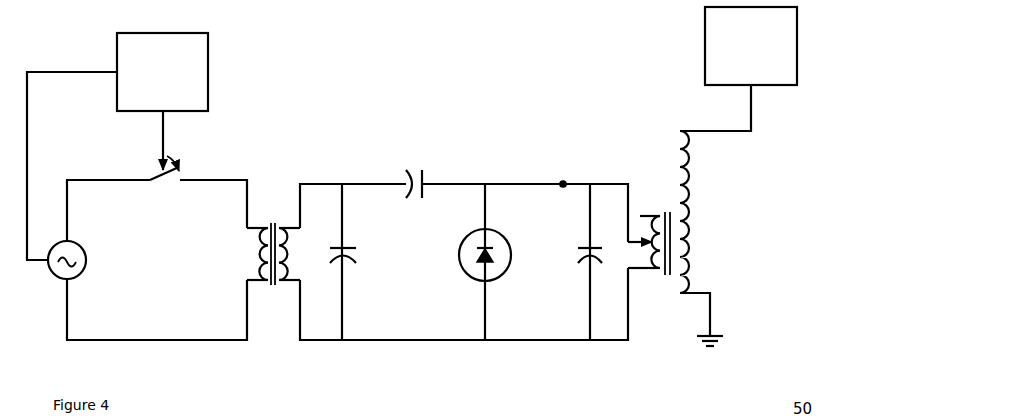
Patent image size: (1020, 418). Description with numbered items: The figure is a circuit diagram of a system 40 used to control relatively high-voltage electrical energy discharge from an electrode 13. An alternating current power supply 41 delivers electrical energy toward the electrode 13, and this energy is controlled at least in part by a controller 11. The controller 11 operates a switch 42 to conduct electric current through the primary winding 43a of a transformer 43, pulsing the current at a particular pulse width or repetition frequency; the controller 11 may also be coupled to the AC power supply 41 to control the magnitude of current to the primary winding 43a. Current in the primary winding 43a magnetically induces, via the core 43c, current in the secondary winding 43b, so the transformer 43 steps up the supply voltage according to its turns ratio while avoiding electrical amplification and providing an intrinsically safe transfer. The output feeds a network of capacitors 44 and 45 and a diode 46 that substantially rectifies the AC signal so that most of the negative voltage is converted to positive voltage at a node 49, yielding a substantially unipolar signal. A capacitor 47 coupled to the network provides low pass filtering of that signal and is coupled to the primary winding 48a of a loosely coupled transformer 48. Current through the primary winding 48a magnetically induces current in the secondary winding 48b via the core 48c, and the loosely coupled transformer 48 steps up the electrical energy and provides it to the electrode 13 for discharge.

The controller 11 is at (153, 94).
The electrode 13 is at (742, 67).
The system 40 is at (830, 72).
The AC power supply 41 is at (89, 266).
The switch 42 is at (182, 152).
The transformer 43 is at (269, 257).
The primary winding 43a is at (256, 255).
The secondary winding 43b is at (291, 256).
The core 43c is at (273, 292).
The capacitor 44 is at (356, 248).
The capacitor 45 is at (426, 172).
The diode 46 is at (511, 240).
The capacitor 47 is at (599, 246).
The loosely coupled transformer 48 is at (672, 238).
The primary winding 48a is at (657, 276).
The secondary winding 48b is at (696, 213).
The core 48c is at (670, 281).
The node 49 is at (563, 180).